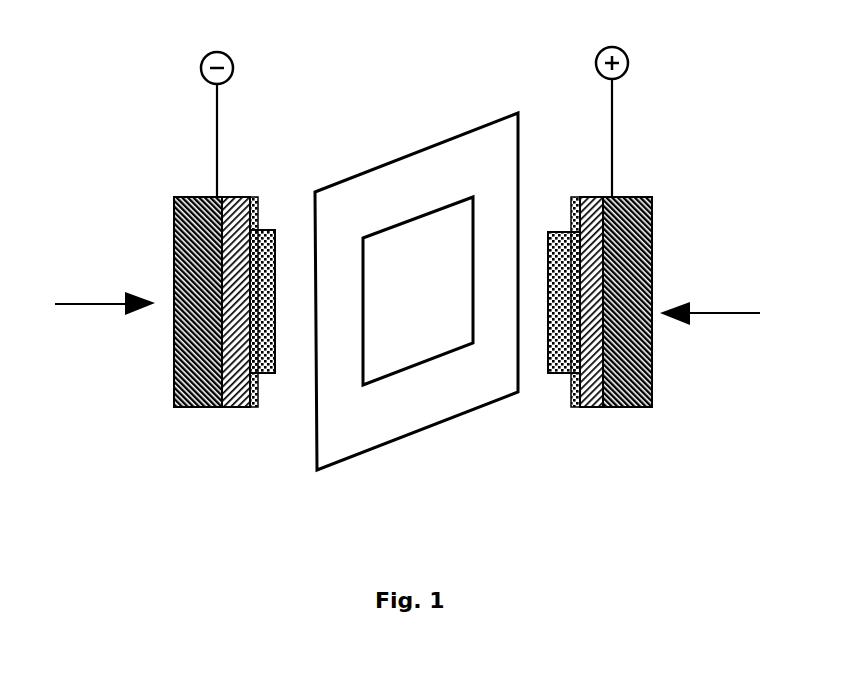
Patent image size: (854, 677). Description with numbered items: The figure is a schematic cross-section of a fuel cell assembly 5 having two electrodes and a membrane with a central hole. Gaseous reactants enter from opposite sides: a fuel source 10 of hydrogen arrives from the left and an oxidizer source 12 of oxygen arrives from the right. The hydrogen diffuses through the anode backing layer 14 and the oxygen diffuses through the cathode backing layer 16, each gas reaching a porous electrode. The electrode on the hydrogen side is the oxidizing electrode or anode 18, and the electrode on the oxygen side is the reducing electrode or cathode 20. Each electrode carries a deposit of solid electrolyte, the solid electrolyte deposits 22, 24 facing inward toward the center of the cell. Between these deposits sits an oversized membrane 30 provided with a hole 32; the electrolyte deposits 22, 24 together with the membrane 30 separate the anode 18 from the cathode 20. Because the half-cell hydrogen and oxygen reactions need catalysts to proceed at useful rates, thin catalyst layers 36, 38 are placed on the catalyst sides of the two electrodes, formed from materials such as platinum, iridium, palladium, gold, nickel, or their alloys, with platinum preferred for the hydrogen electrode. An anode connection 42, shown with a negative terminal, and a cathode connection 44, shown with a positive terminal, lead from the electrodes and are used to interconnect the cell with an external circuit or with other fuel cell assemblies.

The fuel cell assembly 5 is at (78, 99).
The fuel source 10 is at (106, 302).
The oxidizer source 12 is at (712, 303).
The anode backing layer 14 is at (175, 362).
The cathode backing layer 16 is at (632, 363).
The anode 18 is at (235, 407).
The cathode 20 is at (590, 407).
The solid electrolyte deposit 22 is at (266, 232).
The solid electrolyte deposit 24 is at (564, 232).
The oversized membrane 30 is at (348, 432).
The hole 32 is at (410, 350).
The catalyst layer 36 is at (257, 367).
The catalyst layer 38 is at (575, 367).
The anode connection 42 is at (212, 113).
The cathode connection 44 is at (618, 115).